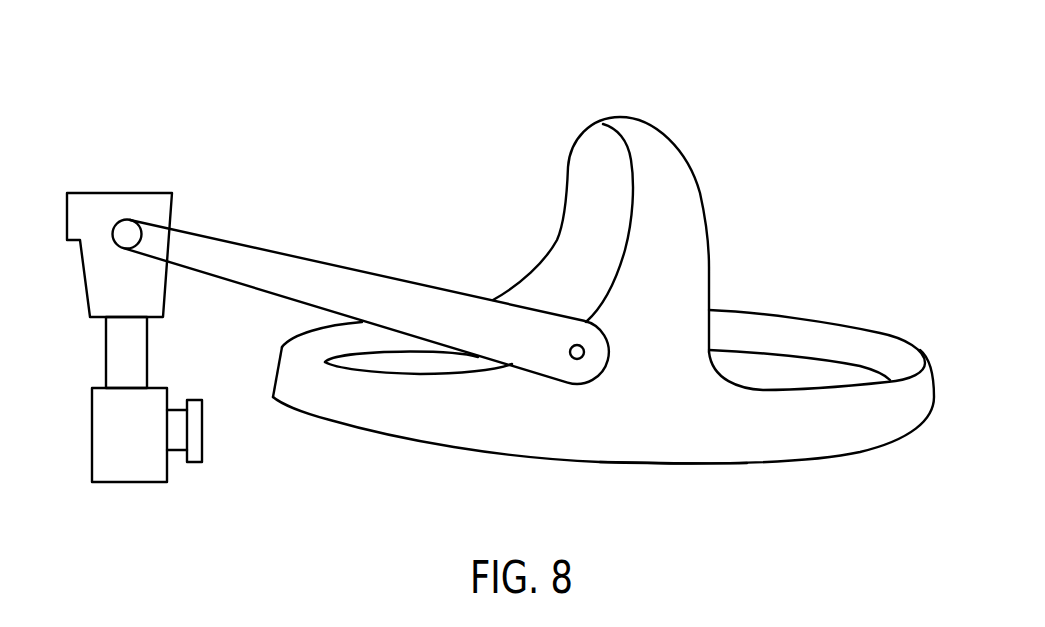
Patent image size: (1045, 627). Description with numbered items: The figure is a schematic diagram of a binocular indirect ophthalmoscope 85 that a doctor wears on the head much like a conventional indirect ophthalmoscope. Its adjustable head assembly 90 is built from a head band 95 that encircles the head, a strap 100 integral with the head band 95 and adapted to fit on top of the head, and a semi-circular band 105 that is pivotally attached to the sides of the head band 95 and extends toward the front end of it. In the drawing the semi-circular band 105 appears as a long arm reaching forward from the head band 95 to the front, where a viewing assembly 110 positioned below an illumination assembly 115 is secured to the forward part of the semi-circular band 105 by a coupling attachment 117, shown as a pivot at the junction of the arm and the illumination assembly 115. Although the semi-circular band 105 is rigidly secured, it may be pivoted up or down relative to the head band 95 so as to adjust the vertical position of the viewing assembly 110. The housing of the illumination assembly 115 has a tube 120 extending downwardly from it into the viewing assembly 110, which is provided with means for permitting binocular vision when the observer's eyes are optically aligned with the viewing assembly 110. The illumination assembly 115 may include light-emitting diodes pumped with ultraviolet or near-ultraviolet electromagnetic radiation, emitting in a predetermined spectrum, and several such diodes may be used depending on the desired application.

The binocular indirect ophthalmoscope 85 is at (505, 78).
The adjustable head assembly 90 is at (773, 218).
The head band 95 is at (668, 445).
The strap 100 is at (658, 137).
The semi-circular band 105 is at (275, 265).
The viewing assembly 110 is at (103, 428).
The illumination assembly 115 is at (83, 212).
The coupling attachment 117 is at (123, 227).
The tube 120 is at (120, 340).